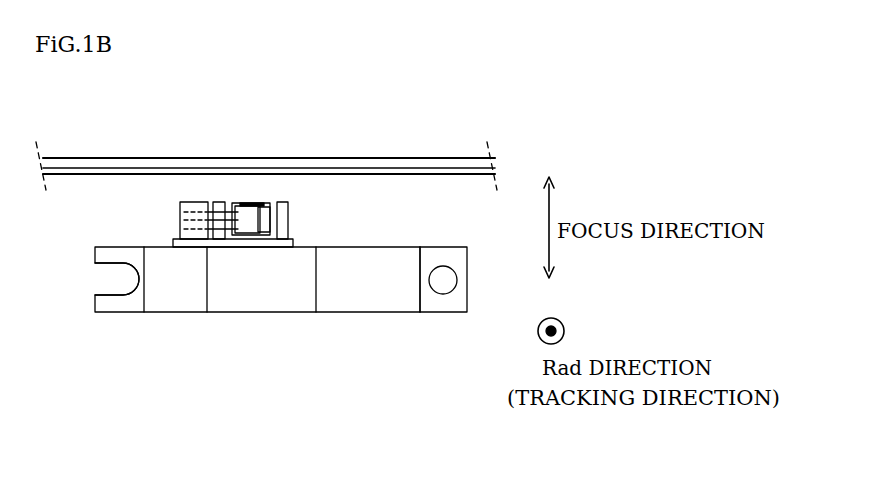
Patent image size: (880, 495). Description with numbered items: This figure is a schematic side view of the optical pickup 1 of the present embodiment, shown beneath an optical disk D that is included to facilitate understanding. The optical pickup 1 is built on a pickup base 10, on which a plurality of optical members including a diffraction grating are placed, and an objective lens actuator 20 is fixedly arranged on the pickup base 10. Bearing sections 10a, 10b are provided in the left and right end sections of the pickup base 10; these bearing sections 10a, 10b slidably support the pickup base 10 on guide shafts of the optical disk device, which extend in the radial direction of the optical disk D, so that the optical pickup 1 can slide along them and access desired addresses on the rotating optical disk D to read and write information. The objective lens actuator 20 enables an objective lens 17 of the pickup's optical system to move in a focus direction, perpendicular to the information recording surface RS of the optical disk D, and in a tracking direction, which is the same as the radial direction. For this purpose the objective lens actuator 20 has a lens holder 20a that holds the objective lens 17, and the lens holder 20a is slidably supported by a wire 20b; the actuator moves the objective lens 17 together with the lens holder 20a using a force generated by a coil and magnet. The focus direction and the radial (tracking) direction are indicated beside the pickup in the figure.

The optical pickup 1 is at (408, 238).
The pickup base 10 is at (367, 312).
The bearing section 10a is at (461, 252).
The bearing section 10b is at (97, 250).
The objective lens 17 is at (250, 204).
The objective lens actuator 20 is at (164, 209).
The lens holder 20a is at (265, 215).
The wire 20b is at (240, 203).
The optical disk D is at (272, 158).
The information recording surface RS is at (412, 168).